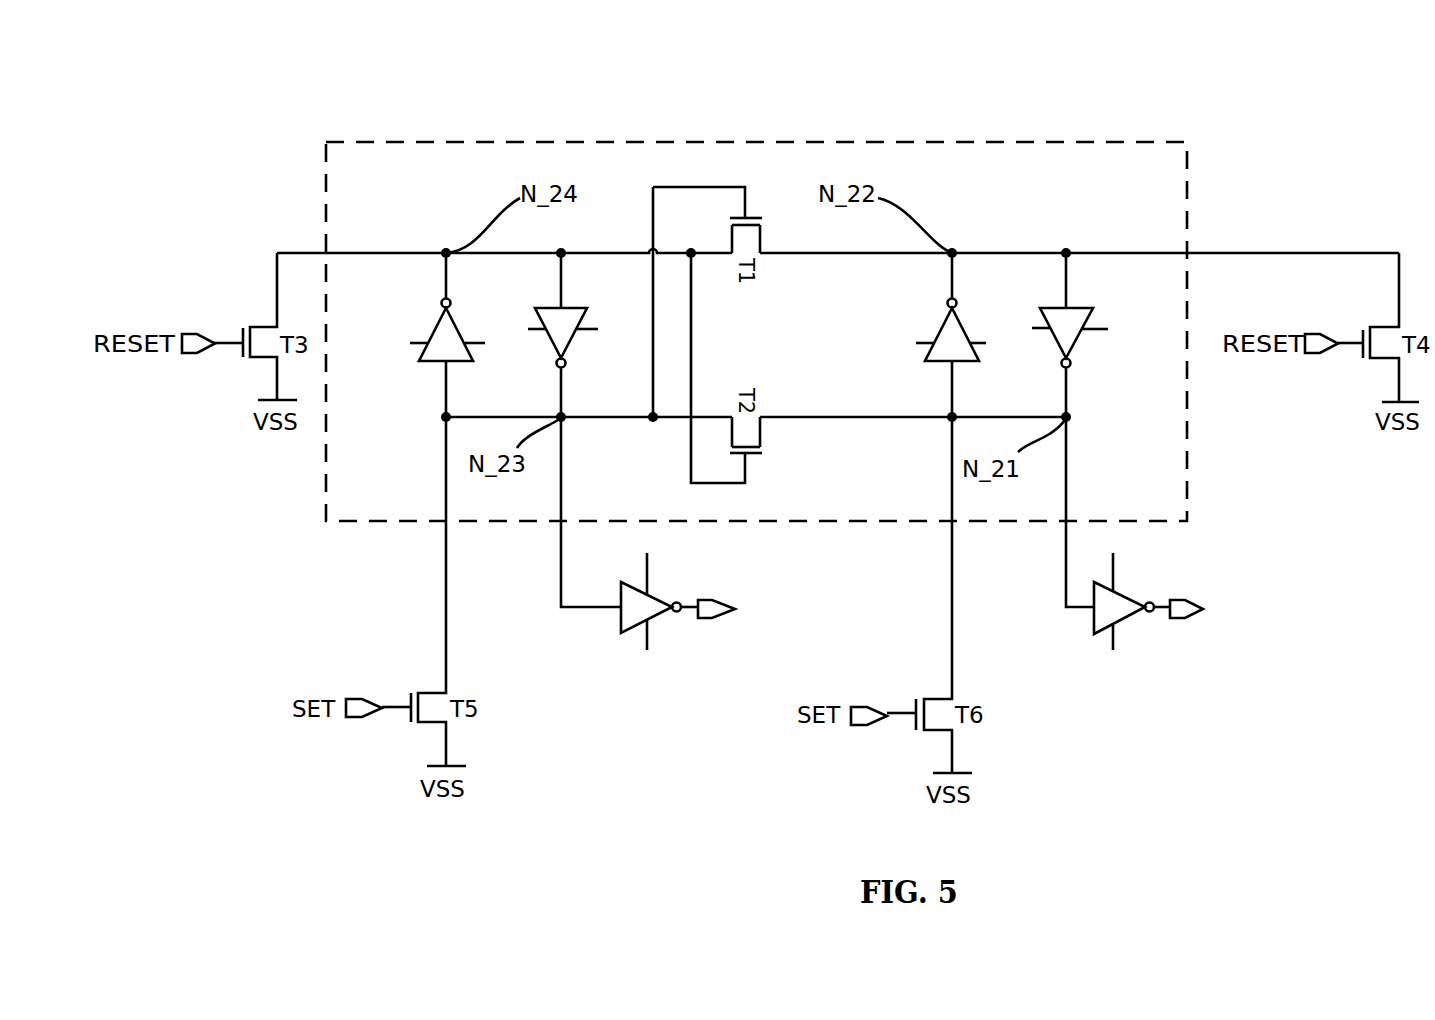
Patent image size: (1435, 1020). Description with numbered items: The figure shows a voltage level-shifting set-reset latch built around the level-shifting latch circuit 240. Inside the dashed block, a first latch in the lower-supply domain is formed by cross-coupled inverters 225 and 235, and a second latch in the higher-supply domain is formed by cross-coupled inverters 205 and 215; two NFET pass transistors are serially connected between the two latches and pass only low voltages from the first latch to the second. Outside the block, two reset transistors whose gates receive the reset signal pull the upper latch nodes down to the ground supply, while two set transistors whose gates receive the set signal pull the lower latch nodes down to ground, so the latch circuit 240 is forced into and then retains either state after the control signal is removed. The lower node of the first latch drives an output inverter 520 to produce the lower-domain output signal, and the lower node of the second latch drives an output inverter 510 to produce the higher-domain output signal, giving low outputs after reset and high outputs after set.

The level-shifting latch circuit 240 is at (1168, 140).
The inverter 235 is at (442, 362).
The inverter 225 is at (553, 348).
The inverter 215 is at (932, 360).
The inverter 205 is at (1080, 337).
The output inverter (VDD domain) 520 is at (660, 615).
The output inverter (VIO domain) 510 is at (1138, 615).